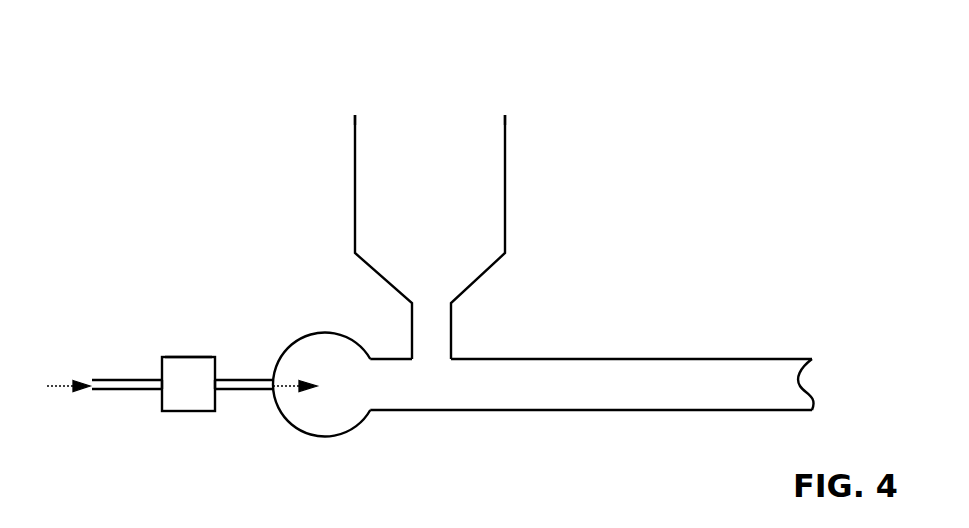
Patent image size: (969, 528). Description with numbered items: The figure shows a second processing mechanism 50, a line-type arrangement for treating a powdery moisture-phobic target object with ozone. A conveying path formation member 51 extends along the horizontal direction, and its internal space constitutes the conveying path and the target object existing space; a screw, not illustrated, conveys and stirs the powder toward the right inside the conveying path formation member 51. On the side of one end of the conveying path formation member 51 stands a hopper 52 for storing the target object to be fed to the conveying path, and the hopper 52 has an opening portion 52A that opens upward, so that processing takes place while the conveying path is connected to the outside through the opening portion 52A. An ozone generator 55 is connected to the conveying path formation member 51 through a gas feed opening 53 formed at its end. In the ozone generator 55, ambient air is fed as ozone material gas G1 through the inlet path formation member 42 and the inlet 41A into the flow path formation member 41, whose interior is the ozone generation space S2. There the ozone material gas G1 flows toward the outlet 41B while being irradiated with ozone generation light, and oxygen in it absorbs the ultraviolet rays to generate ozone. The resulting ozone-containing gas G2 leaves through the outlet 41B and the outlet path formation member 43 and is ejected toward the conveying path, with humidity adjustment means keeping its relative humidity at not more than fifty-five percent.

The second processing mechanism 50 is at (185, 97).
The ozone material gas G1 is at (57, 378).
The ozone-containing gas G2 is at (282, 383).
The inlet path formation member 42 is at (105, 378).
The outlet path formation member 43 is at (245, 380).
The flow path formation member 41 is at (193, 412).
The inlet 41A is at (167, 386).
The outlet 41B is at (212, 386).
The ozone generation space S2 is at (175, 370).
The ozone generator 55 is at (188, 350).
The gas feed opening 53 is at (278, 377).
The conveying path formation member 51 is at (627, 359).
The hopper 52 is at (507, 157).
The opening portion 52A is at (463, 115).